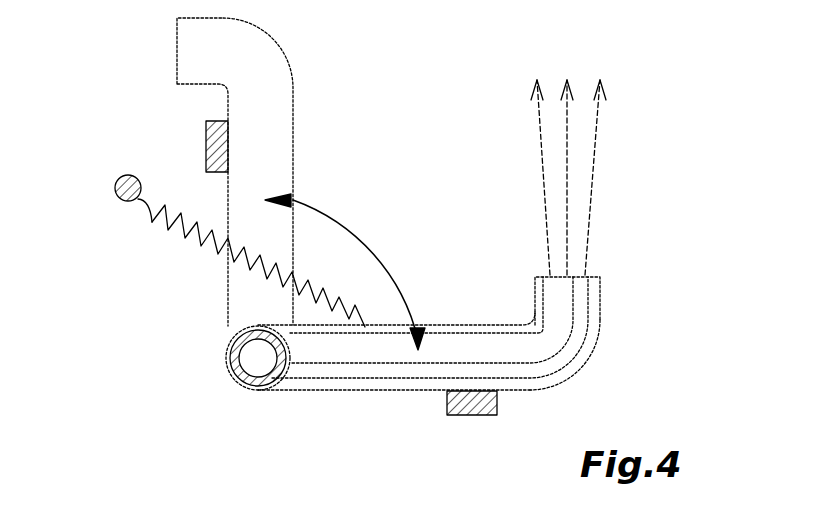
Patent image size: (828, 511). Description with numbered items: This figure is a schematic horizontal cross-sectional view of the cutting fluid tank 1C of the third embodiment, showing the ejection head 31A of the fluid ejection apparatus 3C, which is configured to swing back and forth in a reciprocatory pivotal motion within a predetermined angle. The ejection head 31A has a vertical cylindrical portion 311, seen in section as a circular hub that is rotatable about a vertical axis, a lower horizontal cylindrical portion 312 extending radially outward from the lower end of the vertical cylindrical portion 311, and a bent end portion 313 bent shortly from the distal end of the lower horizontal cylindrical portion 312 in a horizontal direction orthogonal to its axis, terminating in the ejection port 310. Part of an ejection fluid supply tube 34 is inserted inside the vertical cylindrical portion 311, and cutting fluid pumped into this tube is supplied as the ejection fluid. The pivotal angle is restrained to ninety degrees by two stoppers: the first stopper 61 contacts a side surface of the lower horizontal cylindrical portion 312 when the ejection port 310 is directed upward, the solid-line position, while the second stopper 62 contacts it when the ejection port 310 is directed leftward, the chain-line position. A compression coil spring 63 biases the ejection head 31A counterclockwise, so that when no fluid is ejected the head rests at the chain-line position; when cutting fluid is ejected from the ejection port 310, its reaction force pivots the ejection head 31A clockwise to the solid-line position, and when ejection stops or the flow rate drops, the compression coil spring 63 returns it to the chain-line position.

The ejection port 310 is at (177, 50).
The ejection head 31A is at (290, 58).
The lower horizontal cylindrical portion 312 is at (470, 347).
The bent end portion 313 is at (590, 305).
The fluid ejection apparatus 3C is at (583, 368).
The ejection fluid supply tube 34 is at (230, 338).
The vertical cylindrical portion 311 is at (228, 368).
The second stopper 62 is at (206, 150).
The first stopper 61 is at (497, 403).
The compression coil spring 63 is at (205, 250).
The cutting fluid tank 1C is at (408, 105).